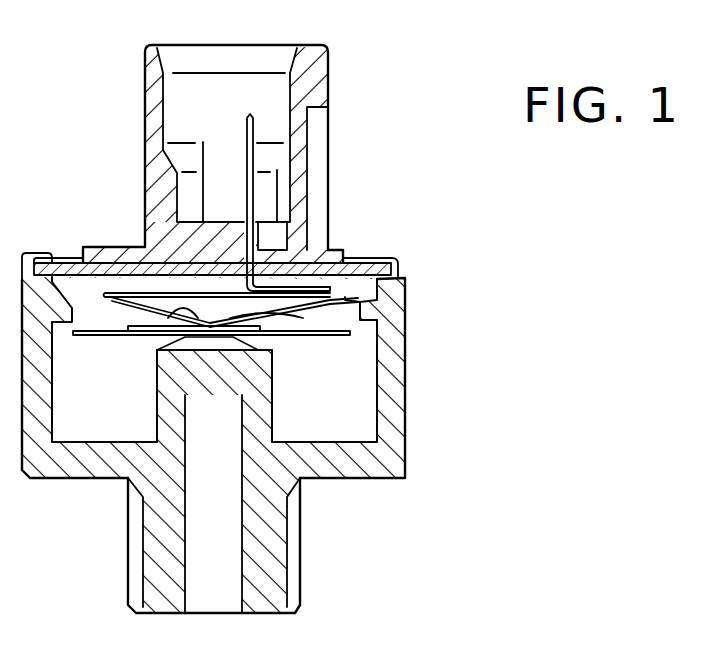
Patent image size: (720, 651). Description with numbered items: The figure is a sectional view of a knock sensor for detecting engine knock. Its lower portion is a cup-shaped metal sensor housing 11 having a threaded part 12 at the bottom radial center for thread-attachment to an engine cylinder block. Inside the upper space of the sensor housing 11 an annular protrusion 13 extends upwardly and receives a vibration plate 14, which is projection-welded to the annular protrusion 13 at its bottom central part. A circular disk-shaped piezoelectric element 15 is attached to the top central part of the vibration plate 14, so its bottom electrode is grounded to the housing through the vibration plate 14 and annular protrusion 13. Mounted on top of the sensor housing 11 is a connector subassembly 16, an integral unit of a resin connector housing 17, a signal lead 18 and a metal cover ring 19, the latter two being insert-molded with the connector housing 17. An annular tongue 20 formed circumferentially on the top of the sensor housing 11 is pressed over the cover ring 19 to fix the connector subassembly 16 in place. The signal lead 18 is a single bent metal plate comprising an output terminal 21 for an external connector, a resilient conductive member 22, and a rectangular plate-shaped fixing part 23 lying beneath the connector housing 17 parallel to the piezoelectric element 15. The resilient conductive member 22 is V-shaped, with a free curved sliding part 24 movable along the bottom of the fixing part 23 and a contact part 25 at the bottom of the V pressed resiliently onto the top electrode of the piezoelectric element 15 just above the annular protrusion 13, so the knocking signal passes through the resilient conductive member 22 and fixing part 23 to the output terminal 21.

The sensor housing 11 is at (405, 350).
The threaded part 12 is at (305, 551).
The annular protrusion 13 is at (240, 352).
The vibration plate 14 is at (262, 345).
The piezoelectric element 15 is at (350, 330).
The connector subassembly 16 is at (337, 65).
The connector housing 17 is at (307, 180).
The signal lead 18 is at (256, 187).
The cover ring 19 is at (353, 262).
The annular tongue 20 is at (392, 253).
The output terminal 21 is at (258, 163).
The resilient conductive member 22 is at (358, 300).
The fixing part 23 is at (178, 303).
The sliding part 24 is at (390, 270).
The contact part 25 is at (163, 318).